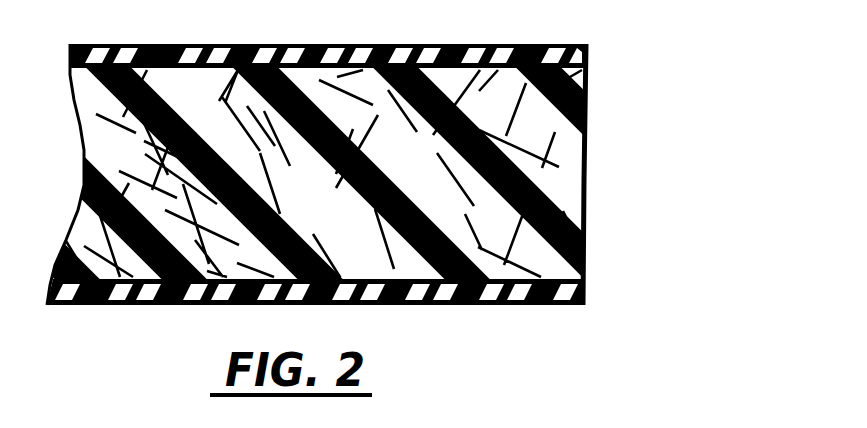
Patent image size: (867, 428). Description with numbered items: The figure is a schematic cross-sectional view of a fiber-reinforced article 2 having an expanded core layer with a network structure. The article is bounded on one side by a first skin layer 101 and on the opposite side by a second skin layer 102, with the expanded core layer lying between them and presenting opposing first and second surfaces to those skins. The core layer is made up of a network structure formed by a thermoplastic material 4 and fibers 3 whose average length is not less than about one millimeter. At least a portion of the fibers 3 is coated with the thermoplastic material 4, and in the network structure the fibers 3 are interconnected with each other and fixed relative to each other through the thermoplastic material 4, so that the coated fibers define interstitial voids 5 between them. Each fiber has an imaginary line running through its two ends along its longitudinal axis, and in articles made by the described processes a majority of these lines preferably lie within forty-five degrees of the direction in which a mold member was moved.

The fiber reinforced prepreg sheet 2 is at (584, 206).
The fibers 3 is at (75, 101).
The thermoplastic material 4 is at (585, 161).
The interstitial voids 5 is at (80, 190).
The first skin layer 101 is at (586, 53).
The second skin layer 102 is at (584, 302).